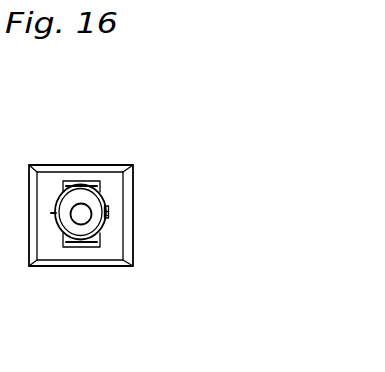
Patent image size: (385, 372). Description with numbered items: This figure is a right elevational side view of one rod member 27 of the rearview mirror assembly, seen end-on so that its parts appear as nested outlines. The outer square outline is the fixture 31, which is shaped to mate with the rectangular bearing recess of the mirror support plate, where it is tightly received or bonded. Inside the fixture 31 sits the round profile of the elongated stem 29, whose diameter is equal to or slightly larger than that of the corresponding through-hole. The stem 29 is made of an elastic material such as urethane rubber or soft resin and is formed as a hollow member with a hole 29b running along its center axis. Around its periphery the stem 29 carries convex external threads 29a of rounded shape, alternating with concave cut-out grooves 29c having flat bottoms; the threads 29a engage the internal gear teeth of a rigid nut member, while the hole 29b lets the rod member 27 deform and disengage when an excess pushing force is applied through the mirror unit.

The rod member 27 is at (46, 156).
The fixture 31 is at (113, 248).
The elongated stem 29 is at (95, 221).
The external threads 29a is at (77, 184).
The hole 29b is at (83, 209).
The cut-out grooves 29c is at (108, 212).